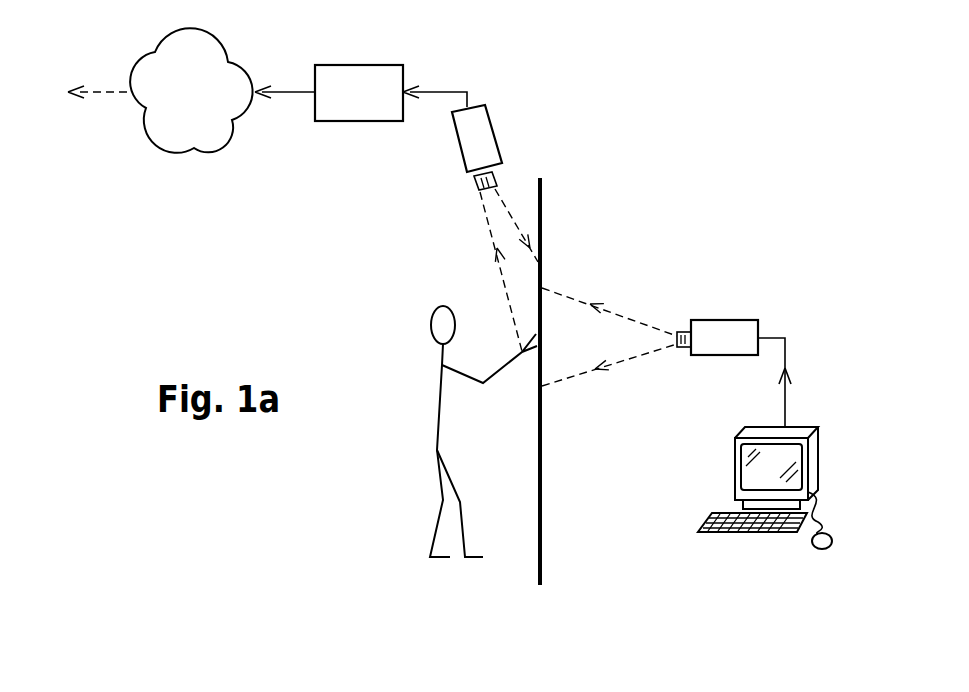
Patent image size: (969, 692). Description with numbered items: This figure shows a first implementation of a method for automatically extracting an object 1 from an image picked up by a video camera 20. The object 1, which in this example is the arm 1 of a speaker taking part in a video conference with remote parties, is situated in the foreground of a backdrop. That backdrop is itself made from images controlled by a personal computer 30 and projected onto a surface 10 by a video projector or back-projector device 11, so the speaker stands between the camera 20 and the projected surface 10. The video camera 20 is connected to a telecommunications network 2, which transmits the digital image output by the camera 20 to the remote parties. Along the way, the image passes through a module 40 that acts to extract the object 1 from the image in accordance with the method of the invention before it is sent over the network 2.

The object 1 is at (507, 373).
The telecommunications network 2 is at (208, 130).
The surface 10 is at (542, 233).
The video projector or back-projector device 11 is at (727, 325).
The video camera 20 is at (483, 127).
The personal computer 30 is at (803, 432).
The module 40 is at (355, 110).